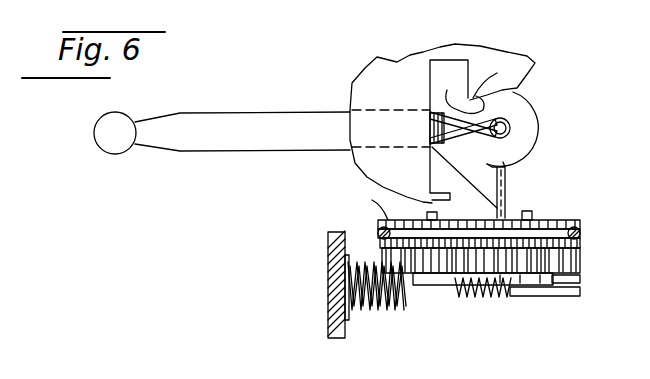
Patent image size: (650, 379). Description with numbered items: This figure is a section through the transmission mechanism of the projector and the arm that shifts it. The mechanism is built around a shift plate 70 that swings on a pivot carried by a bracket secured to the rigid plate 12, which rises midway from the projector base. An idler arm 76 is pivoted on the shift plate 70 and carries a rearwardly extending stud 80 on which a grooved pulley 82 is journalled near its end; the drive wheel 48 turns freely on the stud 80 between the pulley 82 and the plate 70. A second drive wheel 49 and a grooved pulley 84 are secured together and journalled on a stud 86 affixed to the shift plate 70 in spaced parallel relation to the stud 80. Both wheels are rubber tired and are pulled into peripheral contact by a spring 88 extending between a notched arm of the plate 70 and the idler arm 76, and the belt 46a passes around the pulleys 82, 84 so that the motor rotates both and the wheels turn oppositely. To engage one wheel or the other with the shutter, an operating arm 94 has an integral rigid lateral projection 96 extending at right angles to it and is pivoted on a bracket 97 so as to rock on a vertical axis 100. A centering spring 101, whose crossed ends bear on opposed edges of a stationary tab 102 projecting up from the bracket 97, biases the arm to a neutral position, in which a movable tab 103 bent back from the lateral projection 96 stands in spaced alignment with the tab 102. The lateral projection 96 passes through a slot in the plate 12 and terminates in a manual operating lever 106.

The rigid plate 12 is at (330, 330).
The belt 46a is at (582, 230).
The drive wheel 48 is at (582, 256).
The drive wheel 49 is at (430, 272).
The shift plate 70 is at (446, 290).
The idler arm 76 is at (560, 296).
The stud 80 is at (530, 211).
The grooved pulley 82 is at (565, 222).
The grooved pulley 84 is at (369, 207).
The stud 86 is at (430, 212).
The spring 88 is at (503, 290).
The operating arm 94 is at (515, 187).
The lateral projection 96 is at (257, 112).
The bracket 97 is at (535, 62).
The vertical axis 100 is at (503, 122).
The centering spring 101 is at (498, 83).
The stationary tab 102 is at (430, 128).
The movable tab 103 is at (448, 100).
The manual operating lever 106 is at (97, 133).